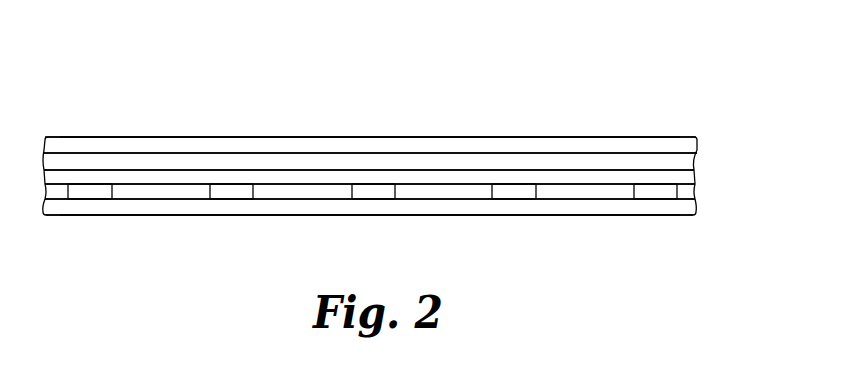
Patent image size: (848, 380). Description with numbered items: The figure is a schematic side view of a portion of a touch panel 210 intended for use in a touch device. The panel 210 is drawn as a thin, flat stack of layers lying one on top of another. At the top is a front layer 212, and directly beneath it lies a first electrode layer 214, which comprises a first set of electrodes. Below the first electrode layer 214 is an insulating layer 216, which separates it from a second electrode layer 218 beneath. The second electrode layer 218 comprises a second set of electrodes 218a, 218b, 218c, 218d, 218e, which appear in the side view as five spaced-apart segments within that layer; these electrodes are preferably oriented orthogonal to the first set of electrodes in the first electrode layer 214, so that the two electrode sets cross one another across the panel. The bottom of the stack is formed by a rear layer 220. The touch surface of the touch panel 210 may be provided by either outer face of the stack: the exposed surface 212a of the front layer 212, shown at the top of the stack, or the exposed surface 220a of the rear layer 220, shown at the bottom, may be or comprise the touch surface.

The touch panel 210 is at (710, 72).
The front layer 212 is at (647, 144).
The exposed surface of front layer 212a is at (510, 138).
The first electrode layer 214 is at (690, 162).
The insulating layer 216 is at (688, 177).
The second electrode layer 218 is at (691, 192).
The electrode 218a is at (93, 193).
The electrode 218b is at (233, 193).
The electrode 218c is at (370, 193).
The electrode 218d is at (513, 193).
The electrode 218e is at (660, 193).
The rear layer 220 is at (692, 207).
The exposed surface of rear layer 220a is at (160, 217).